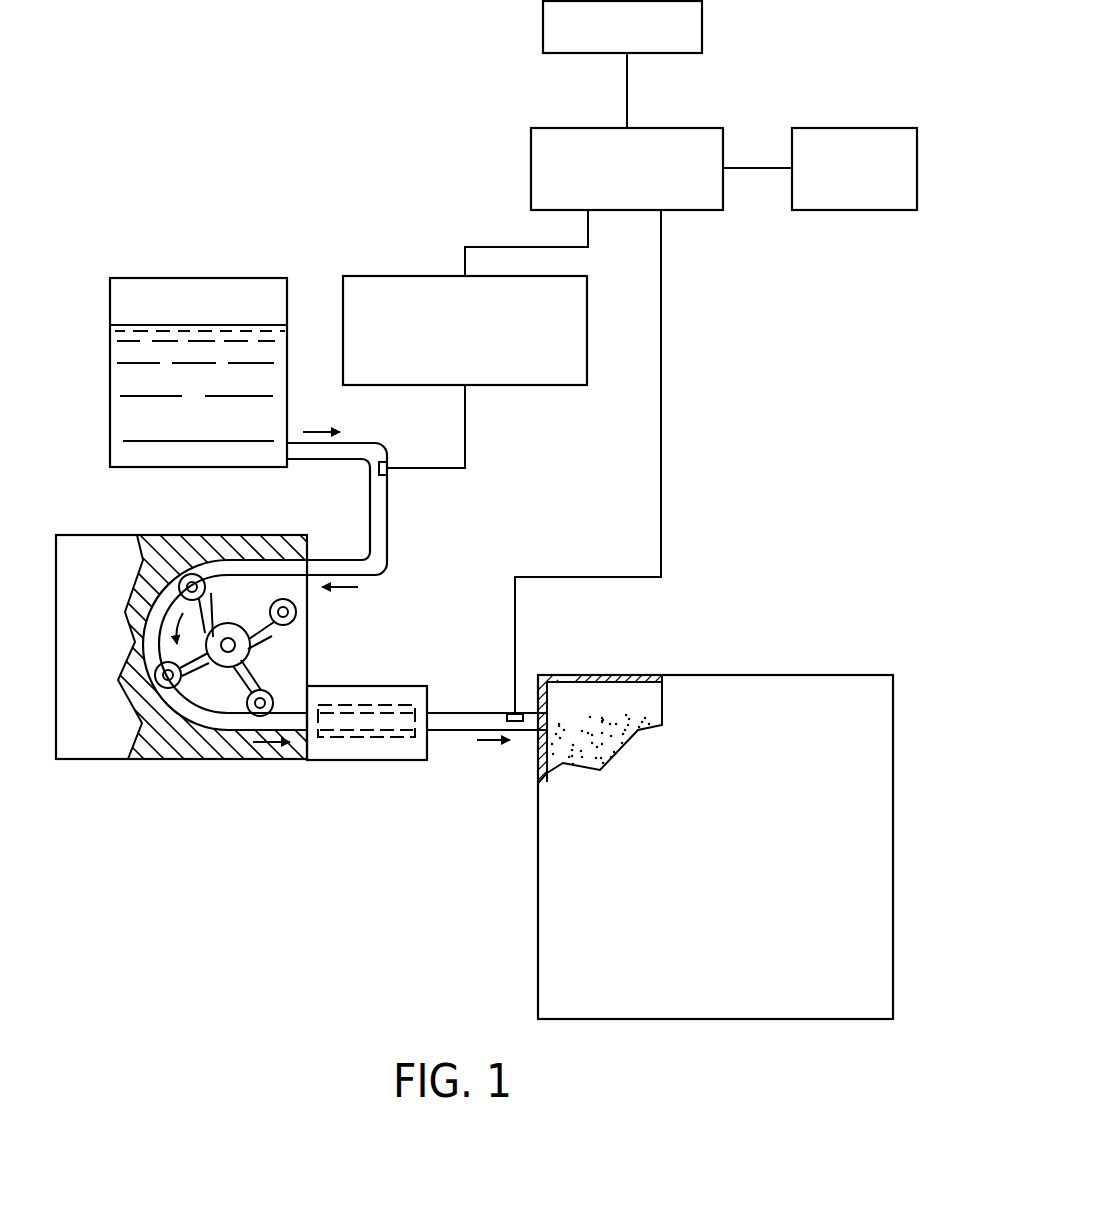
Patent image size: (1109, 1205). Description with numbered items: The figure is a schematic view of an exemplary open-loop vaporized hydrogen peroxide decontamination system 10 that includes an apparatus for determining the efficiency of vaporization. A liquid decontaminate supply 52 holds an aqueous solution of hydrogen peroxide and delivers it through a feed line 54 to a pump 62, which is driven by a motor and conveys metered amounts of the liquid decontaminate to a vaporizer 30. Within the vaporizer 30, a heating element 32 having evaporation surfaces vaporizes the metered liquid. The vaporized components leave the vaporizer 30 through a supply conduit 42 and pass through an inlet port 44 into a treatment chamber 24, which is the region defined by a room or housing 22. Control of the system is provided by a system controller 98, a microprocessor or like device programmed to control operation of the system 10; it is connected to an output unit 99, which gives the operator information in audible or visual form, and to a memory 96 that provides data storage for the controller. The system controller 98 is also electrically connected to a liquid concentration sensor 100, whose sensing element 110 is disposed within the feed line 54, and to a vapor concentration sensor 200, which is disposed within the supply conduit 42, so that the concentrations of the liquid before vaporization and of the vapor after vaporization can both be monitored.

The decontamination system 10 is at (357, 165).
The memory 96 is at (702, 23).
The system controller 98 is at (674, 128).
The output unit 99 is at (853, 128).
The liquid concentration sensor 100 is at (420, 278).
The liquid decontaminate supply 52 is at (110, 303).
The feed line 54 is at (387, 525).
The sensing element 110 is at (387, 472).
The pump 62 is at (120, 759).
The vaporizer 30 is at (366, 779).
The heating element 32 is at (347, 733).
The supply conduit 42 is at (462, 730).
The vapor concentration sensor 200 is at (508, 712).
The room or housing 22 is at (715, 816).
The treatment chamber 24 is at (628, 690).
The inlet port 44 is at (548, 718).